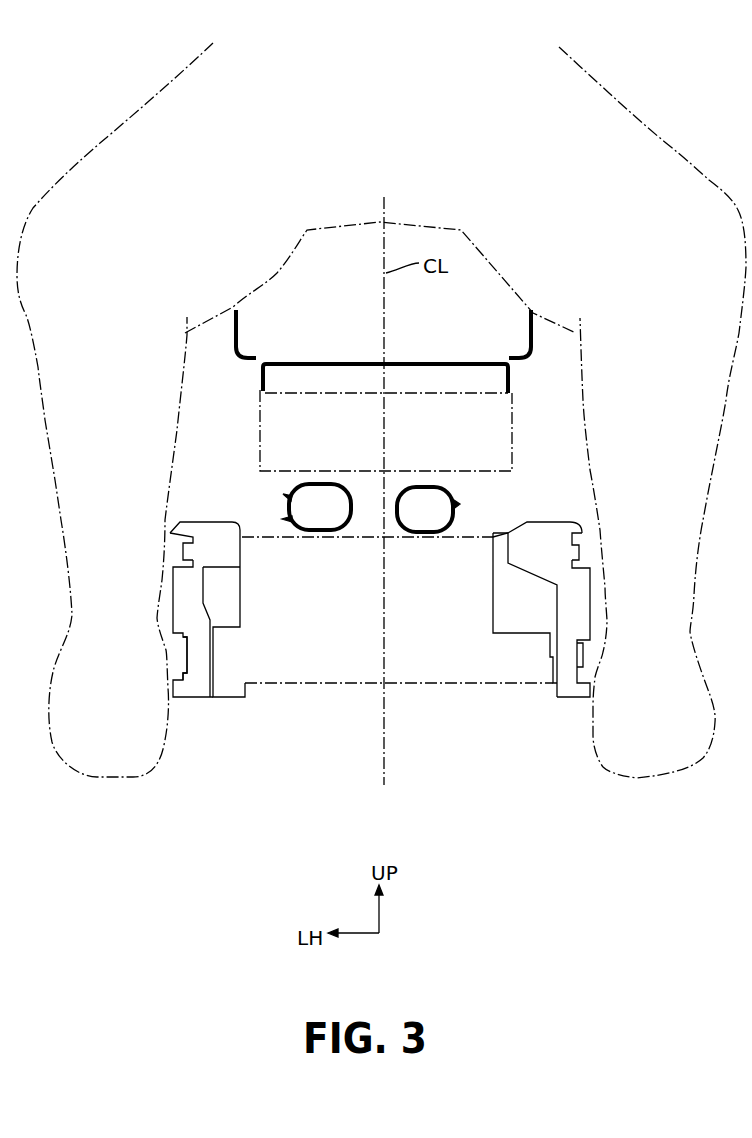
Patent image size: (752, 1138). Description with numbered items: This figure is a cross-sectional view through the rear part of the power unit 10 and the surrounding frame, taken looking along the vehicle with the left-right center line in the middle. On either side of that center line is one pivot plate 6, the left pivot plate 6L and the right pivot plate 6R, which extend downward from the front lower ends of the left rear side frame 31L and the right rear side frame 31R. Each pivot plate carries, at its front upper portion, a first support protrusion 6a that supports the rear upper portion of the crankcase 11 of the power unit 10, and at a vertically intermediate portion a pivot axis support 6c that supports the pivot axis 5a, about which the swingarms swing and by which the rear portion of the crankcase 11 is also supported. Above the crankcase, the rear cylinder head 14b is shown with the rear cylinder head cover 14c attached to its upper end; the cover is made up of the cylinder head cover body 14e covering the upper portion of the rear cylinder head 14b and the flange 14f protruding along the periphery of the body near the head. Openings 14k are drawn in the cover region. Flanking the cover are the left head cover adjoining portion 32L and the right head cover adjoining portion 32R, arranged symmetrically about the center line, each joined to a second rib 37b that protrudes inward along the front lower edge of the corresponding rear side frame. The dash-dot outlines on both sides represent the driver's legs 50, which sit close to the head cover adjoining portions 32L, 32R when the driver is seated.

The driver's legs 50 is at (626, 101).
The left head cover adjoining portion 32L is at (175, 357).
The left rear side frame 31L is at (233, 343).
The right head cover adjoining portion 32R is at (611, 323).
The right rear side frame 31R is at (534, 333).
The second rib 37b is at (250, 350).
The rear cylinder head cover 14c is at (475, 385).
The cylinder head cover body 14e is at (512, 372).
The flange 14f is at (512, 393).
The rear cylinder head 14b is at (513, 428).
The opening / grommet 14k is at (288, 508).
The crankcase 11 is at (537, 589).
The power unit 10 is at (493, 533).
The left pivot plate 6L is at (166, 609).
The right pivot plate 6R is at (592, 598).
The pivot plate 6 is at (172, 613).
The first support protrusion 6a is at (190, 537).
The pivot axis 5a is at (184, 658).
The pivot axis support 6c is at (184, 675).